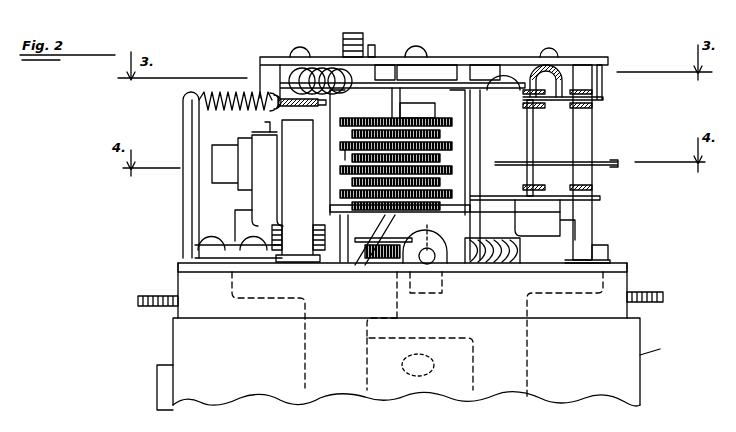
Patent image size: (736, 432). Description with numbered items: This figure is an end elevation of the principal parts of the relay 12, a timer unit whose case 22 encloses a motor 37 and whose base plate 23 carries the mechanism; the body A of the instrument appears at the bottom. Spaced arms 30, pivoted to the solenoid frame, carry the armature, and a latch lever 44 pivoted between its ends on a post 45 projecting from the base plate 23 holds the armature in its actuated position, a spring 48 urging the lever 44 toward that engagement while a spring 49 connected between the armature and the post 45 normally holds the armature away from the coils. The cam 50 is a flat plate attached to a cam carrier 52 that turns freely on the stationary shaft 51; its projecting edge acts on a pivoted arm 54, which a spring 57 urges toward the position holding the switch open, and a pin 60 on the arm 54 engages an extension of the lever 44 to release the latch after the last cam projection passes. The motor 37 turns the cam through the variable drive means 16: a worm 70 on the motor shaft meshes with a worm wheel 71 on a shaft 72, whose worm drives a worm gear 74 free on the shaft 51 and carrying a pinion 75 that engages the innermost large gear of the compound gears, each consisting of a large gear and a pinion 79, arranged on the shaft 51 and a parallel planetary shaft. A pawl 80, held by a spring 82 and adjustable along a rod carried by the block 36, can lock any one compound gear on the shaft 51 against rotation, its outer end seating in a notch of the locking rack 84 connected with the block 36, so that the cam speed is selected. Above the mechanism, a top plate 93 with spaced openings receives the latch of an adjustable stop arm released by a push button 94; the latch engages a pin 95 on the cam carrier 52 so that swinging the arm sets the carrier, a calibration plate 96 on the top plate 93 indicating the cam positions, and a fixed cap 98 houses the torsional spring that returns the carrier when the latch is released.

The relay 12 is at (262, 56).
The variable drive means 16 is at (456, 129).
The case 22 is at (187, 345).
The base plate 23 is at (627, 266).
The arms 30 is at (533, 95).
The block 36 is at (574, 140).
The motor 37 is at (418, 365).
The latch lever 44 is at (298, 191).
The post 45 is at (292, 90).
The spring 48 is at (184, 108).
The spring 49 is at (318, 72).
The cam 50 is at (490, 212).
The shaft 51 is at (421, 92).
The cam carrier 52 is at (355, 245).
The arm 54 is at (252, 198).
The spring 57 is at (262, 230).
The pin 60 is at (265, 125).
The worm 70 is at (392, 258).
The worm wheel 71 is at (458, 257).
The shaft 72 is at (433, 263).
The worm gear 74 is at (375, 258).
The pinion 75 is at (435, 203).
The pinion 79 is at (347, 178).
The pawl 80 is at (598, 166).
The spring 82 is at (530, 192).
The locking rack 84 is at (533, 157).
The top plate 93 is at (528, 60).
The push button 94 is at (364, 36).
The pin 95 is at (400, 70).
The calibration plate 96 is at (562, 60).
The cap 98 is at (470, 64).
The instrument body A is at (628, 357).